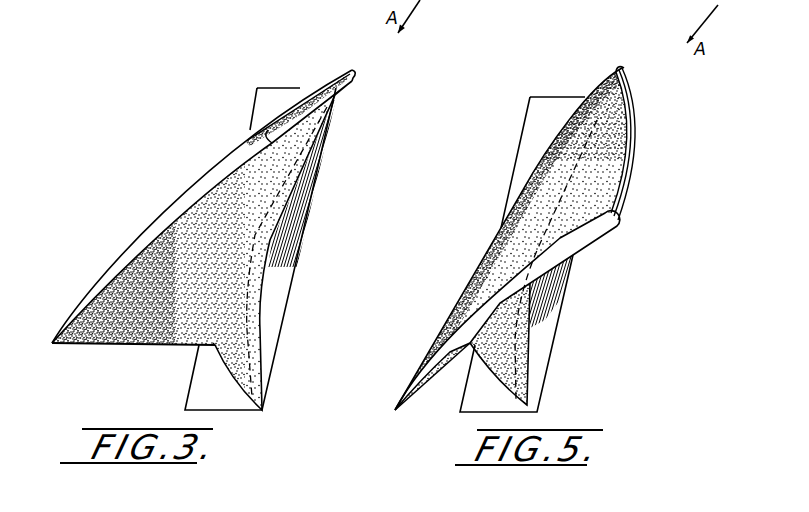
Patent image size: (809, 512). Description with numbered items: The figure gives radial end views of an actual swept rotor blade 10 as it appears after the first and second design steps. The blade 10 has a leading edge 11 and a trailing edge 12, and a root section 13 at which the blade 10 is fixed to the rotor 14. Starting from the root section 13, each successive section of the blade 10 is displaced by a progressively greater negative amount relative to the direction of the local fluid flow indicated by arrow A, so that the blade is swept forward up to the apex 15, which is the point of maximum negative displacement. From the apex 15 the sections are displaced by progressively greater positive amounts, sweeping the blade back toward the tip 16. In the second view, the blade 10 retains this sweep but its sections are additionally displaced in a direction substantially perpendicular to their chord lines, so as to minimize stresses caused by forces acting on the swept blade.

In FIG. 3, the rotor blade 10 is at (82, 314).
In FIG. 5, the rotor blade 10 is at (477, 282).
In FIG. 3, the leading edge 11 is at (330, 80).
In FIG. 5, the leading edge 11 is at (633, 100).
In FIG. 3, the trailing edge 12 is at (140, 345).
In FIG. 5, the trailing edge 12 is at (460, 353).
In FIG. 3, the root section 13 is at (268, 213).
In FIG. 5, the root section 13 is at (520, 343).
In FIG. 3, the rotor 14 is at (283, 270).
In FIG. 5, the rotor 14 is at (557, 103).
In FIG. 3, the apex 15 is at (357, 70).
In FIG. 5, the apex 15 is at (625, 67).
In FIG. 3, the tip 16 is at (160, 213).
In FIG. 5, the tip 16 is at (607, 223).